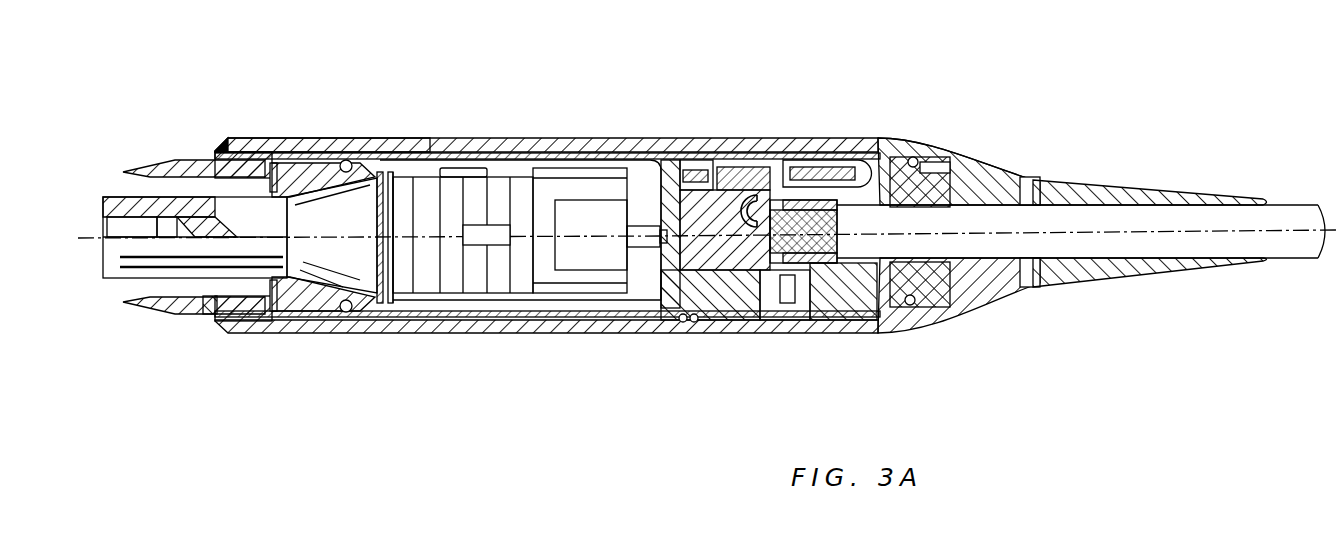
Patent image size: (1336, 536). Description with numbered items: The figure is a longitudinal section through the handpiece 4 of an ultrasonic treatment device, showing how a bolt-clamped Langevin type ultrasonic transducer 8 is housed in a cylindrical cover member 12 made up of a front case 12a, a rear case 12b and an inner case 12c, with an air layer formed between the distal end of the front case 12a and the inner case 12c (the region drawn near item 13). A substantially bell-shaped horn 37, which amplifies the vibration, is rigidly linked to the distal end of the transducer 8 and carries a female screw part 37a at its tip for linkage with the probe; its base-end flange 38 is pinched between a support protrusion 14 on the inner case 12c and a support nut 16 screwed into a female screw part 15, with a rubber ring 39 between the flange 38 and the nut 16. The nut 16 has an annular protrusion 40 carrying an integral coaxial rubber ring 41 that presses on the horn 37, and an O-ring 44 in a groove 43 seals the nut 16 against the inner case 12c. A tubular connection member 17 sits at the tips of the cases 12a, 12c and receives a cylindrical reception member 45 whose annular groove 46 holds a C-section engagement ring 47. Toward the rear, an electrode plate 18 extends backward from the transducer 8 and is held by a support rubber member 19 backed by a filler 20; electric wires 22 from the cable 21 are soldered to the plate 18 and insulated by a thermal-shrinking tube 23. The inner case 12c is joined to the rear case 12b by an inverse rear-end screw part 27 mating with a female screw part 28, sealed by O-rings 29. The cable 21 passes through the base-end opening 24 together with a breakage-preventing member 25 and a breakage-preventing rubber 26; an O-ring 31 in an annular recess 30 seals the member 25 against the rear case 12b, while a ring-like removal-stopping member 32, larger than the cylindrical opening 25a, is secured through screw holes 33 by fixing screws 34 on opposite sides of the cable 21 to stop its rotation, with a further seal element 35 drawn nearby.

The handpiece 4 is at (795, 100).
The ultrasonic transducer 8 is at (476, 292).
The cover member 12 is at (732, 120).
The front case 12a is at (437, 137).
The rear case 12b is at (672, 160).
The inner case 12c is at (578, 158).
The inner sleeve 13 is at (480, 153).
The protrusion 14 is at (407, 325).
The female screw part 15 is at (262, 150).
The support nut 16 is at (305, 312).
The connection member 17 is at (213, 146).
The electrode plate 18 is at (622, 166).
The support rubber member 19 is at (712, 152).
The filler 20 is at (770, 165).
The cable 21 is at (1195, 212).
The electric wires 22 is at (853, 158).
The thermal-shrinking tube 23 is at (808, 158).
The base-end opening 24 is at (1042, 177).
The breakage-preventing member 25 is at (958, 175).
The cylindrical opening 25a is at (887, 150).
The breakage-preventing rubber 26 is at (1107, 190).
The rear-end screw part 27 is at (738, 316).
The female screw part 28 is at (748, 160).
The O-rings 29 is at (687, 322).
The annular recess 30 is at (930, 314).
The O-ring 31 is at (912, 156).
The removal-stopping member 32 is at (783, 318).
The screw holes 33 is at (840, 318).
The fixing screw 34 is at (799, 294).
The seal ring 35 is at (880, 318).
The horn 37 is at (340, 312).
The female screw part 37a is at (110, 196).
The flange 38 is at (380, 170).
The rubber ring 39 is at (363, 318).
The annular protrusion 40 is at (262, 313).
The coaxial rubber ring 41 is at (278, 312).
The groove 43 is at (318, 140).
The O-ring 44 is at (341, 160).
The reception member 45 is at (205, 314).
The annular groove 46 is at (165, 314).
The engagement ring 47 is at (170, 160).